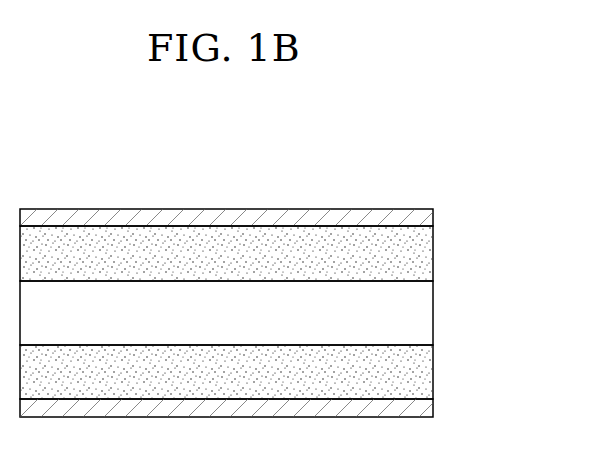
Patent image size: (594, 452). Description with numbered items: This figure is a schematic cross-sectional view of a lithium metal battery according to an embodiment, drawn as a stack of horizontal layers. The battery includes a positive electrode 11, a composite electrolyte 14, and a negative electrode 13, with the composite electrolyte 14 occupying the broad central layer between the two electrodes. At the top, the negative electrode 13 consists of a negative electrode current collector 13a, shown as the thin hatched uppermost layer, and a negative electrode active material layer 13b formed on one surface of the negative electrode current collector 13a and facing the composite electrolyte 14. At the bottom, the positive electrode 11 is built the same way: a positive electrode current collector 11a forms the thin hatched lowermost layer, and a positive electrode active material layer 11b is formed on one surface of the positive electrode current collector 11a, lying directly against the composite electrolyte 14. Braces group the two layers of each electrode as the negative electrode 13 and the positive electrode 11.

The positive electrode 11 is at (295, 382).
The positive electrode current collector 11a is at (433, 405).
The positive electrode active material layer 11b is at (433, 372).
The negative electrode 13 is at (295, 244).
The negative electrode current collector 13a is at (433, 222).
The negative electrode active material layer 13b is at (433, 258).
The composite electrolyte 14 is at (428, 315).